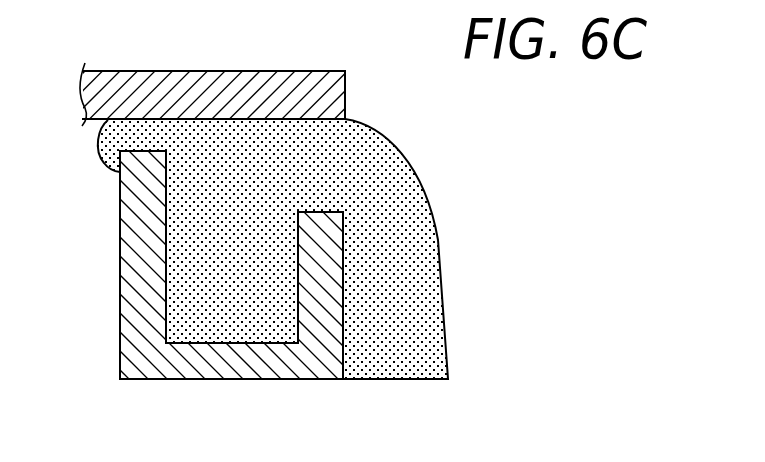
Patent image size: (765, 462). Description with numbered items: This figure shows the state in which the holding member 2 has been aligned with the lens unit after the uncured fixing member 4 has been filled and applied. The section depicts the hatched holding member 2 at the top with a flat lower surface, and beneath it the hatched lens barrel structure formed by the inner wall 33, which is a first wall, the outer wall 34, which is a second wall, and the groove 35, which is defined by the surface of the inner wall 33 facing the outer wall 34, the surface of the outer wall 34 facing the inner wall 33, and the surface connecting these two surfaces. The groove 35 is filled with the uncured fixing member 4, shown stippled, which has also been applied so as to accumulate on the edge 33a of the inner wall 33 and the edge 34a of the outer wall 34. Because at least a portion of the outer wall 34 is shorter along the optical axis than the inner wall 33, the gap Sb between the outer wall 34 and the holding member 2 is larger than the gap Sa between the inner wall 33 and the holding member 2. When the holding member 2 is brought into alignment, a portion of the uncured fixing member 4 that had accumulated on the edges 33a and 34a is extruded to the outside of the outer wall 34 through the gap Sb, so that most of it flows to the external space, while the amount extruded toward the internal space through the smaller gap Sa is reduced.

The holding member 2 is at (279, 70).
The fixing member 4 is at (380, 133).
The inner wall 33 is at (133, 268).
The edge of the inner wall 33a is at (142, 151).
The outer wall 34 is at (337, 288).
The edge of the outer wall 34a is at (322, 208).
The groove 35 is at (225, 343).
The gap Sa is at (103, 141).
The gap Sb is at (322, 168).